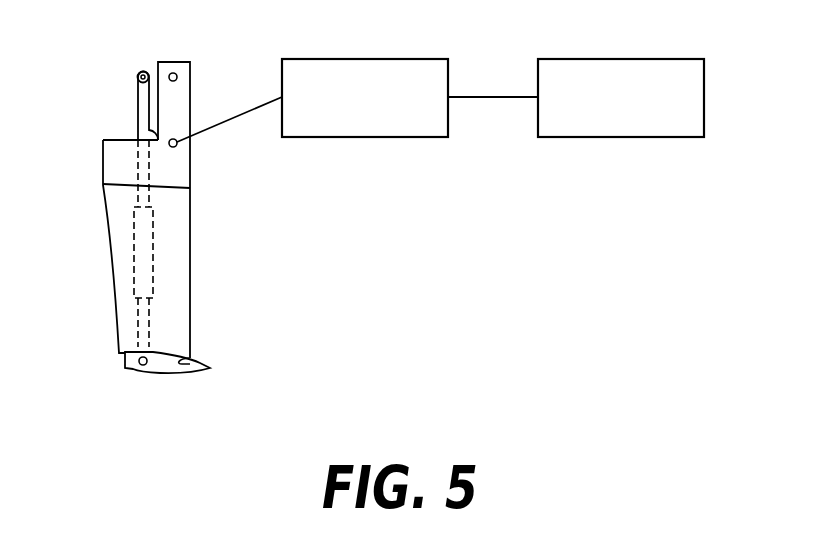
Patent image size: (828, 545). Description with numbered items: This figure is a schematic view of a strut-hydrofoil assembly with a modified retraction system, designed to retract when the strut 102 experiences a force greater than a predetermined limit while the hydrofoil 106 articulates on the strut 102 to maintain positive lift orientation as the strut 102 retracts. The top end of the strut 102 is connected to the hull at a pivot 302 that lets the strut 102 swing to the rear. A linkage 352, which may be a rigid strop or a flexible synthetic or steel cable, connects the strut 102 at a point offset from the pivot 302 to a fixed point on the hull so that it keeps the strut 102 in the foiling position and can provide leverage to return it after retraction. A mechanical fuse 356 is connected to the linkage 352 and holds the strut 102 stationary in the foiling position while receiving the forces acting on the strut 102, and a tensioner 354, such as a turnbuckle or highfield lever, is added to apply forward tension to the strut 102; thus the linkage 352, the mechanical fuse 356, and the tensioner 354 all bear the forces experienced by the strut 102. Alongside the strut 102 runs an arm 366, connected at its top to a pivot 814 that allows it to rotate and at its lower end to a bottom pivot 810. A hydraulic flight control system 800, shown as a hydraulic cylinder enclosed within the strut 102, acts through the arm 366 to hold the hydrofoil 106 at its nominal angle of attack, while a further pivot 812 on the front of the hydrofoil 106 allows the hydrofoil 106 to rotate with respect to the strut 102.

The strut 102 is at (192, 267).
The hydrofoil 106 is at (190, 373).
The pivot 302 is at (173, 73).
The linkage 352 is at (230, 119).
The tensioner 354 is at (623, 59).
The mechanical fuse 356 is at (368, 59).
The arm 366 is at (138, 107).
The hydraulic flight control system 800 is at (137, 265).
The bottom pivot 810 is at (141, 366).
The pivot 812 is at (180, 362).
The pivot 814 is at (143, 71).